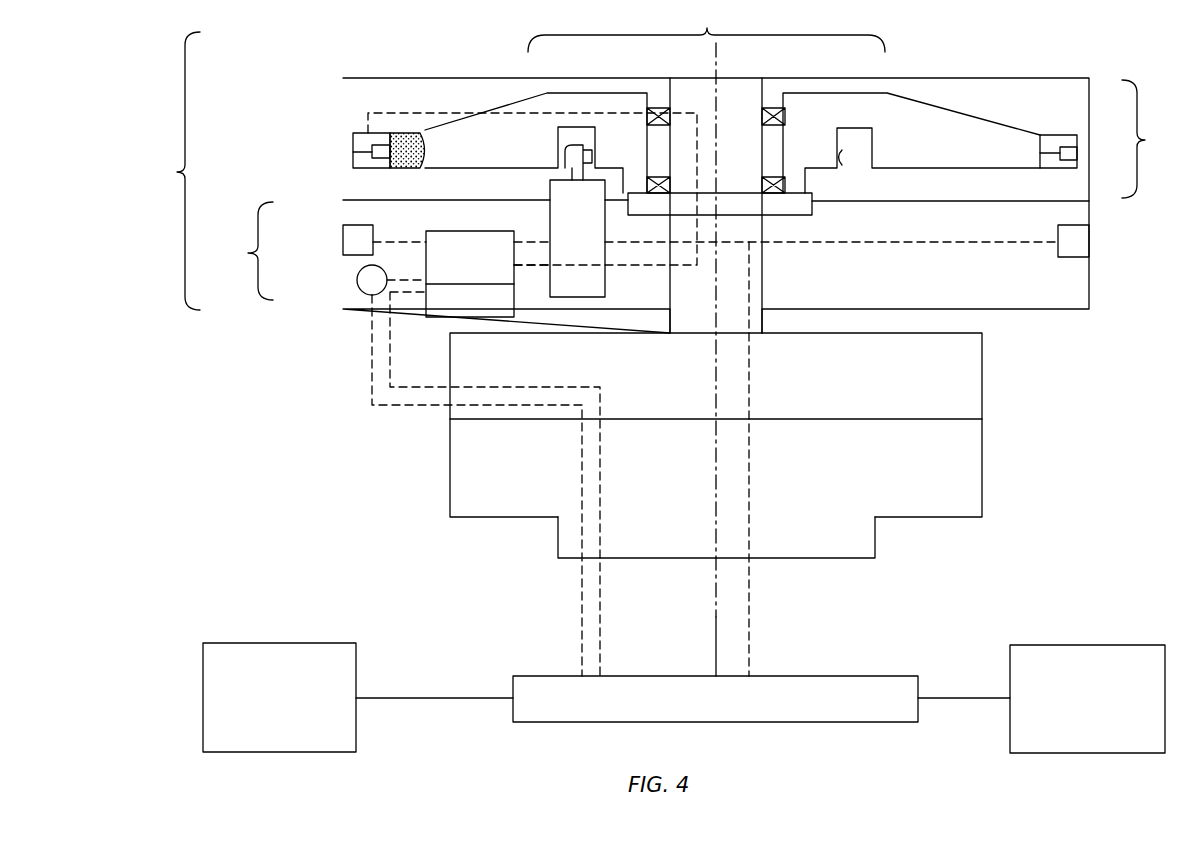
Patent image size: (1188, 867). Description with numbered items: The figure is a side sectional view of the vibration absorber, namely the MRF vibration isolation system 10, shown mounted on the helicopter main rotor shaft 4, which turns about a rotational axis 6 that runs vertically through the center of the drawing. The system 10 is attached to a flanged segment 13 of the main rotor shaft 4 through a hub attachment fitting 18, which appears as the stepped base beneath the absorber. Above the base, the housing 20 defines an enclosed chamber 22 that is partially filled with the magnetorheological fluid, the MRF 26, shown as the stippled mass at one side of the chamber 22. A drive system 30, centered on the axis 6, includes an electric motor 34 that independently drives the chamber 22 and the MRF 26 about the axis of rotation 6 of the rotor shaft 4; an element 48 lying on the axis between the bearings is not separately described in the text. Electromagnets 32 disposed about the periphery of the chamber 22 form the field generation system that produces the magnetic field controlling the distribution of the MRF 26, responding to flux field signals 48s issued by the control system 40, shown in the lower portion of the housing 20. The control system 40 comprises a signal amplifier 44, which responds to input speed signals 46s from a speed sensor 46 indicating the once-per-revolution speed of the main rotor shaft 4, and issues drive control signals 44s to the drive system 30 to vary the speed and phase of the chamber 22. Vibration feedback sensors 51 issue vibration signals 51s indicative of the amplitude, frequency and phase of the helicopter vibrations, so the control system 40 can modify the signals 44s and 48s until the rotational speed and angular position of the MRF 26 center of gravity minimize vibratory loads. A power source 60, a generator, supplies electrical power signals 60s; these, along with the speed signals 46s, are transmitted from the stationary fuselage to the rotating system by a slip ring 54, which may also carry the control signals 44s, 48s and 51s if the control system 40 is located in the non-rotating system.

The MRF vibration isolation system 10 is at (173, 171).
The housing 20 is at (1150, 139).
The drive system 30 is at (706, 27).
The control system 40 is at (246, 251).
The enclosed chamber 22 is at (953, 110).
The MRF 26 is at (410, 134).
The electromagnet 32 is at (352, 148).
The electric motor 34 is at (590, 229).
The signal amplifier 44 is at (484, 258).
The drive control signals 44s is at (528, 268).
The speed sensor 46 is at (1104, 740).
The input speed signals 46s is at (600, 470).
The rotor disk 48 is at (723, 203).
The flux field signals 48s is at (523, 112).
The vibration feedback sensor 51 is at (352, 241).
The vibration signals 51s is at (933, 242).
The slip ring 54 is at (729, 711).
The power source 60 is at (288, 731).
The electrical power signals 60s is at (582, 430).
The hub attachment fitting 18 is at (963, 380).
The flanged segment 13 is at (965, 467).
The main rotor shaft 4 is at (877, 543).
The rotational axis 6 is at (717, 570).